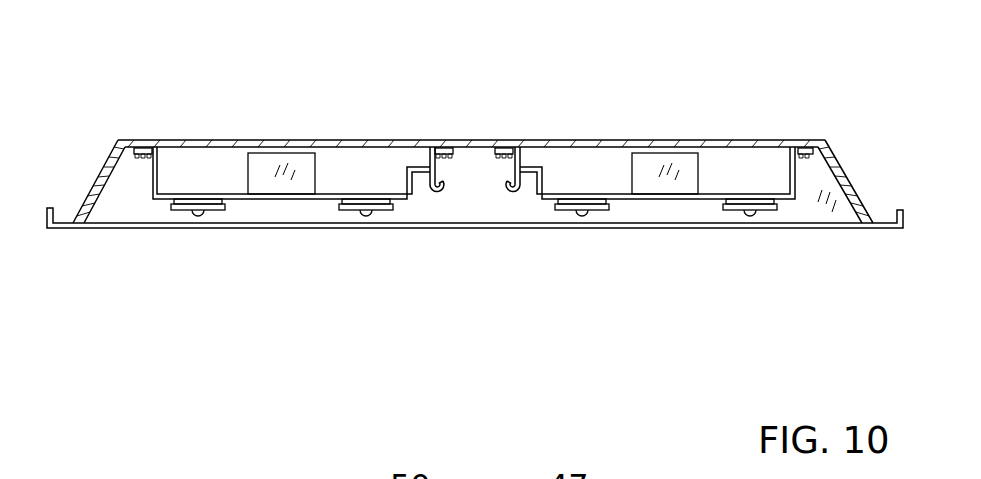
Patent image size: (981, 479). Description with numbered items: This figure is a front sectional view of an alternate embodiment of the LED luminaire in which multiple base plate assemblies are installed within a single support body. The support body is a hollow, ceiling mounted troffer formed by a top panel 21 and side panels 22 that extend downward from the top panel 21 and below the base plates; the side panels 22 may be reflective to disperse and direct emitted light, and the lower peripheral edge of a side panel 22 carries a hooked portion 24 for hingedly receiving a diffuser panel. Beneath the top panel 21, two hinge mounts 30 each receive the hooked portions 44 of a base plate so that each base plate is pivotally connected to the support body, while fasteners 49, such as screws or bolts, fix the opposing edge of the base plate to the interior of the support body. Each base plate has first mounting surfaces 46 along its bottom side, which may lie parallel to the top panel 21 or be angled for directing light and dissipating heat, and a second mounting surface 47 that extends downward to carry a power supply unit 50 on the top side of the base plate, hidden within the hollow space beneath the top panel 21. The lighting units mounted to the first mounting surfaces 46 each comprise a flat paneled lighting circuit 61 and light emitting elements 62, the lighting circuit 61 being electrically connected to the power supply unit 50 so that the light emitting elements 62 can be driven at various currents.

The top panel 21 is at (364, 141).
The side panels 22 is at (93, 163).
The hooked portion 24 is at (48, 229).
The hinge mount 30 is at (428, 156).
The hooked portions 44 is at (441, 186).
The first mounting surfaces 46 is at (624, 200).
The second mounting surface 47 is at (590, 194).
The fasteners 49 is at (811, 160).
The power supply unit 50 is at (270, 172).
The lighting circuit 61 is at (342, 210).
The light emitting elements 62 is at (372, 210).